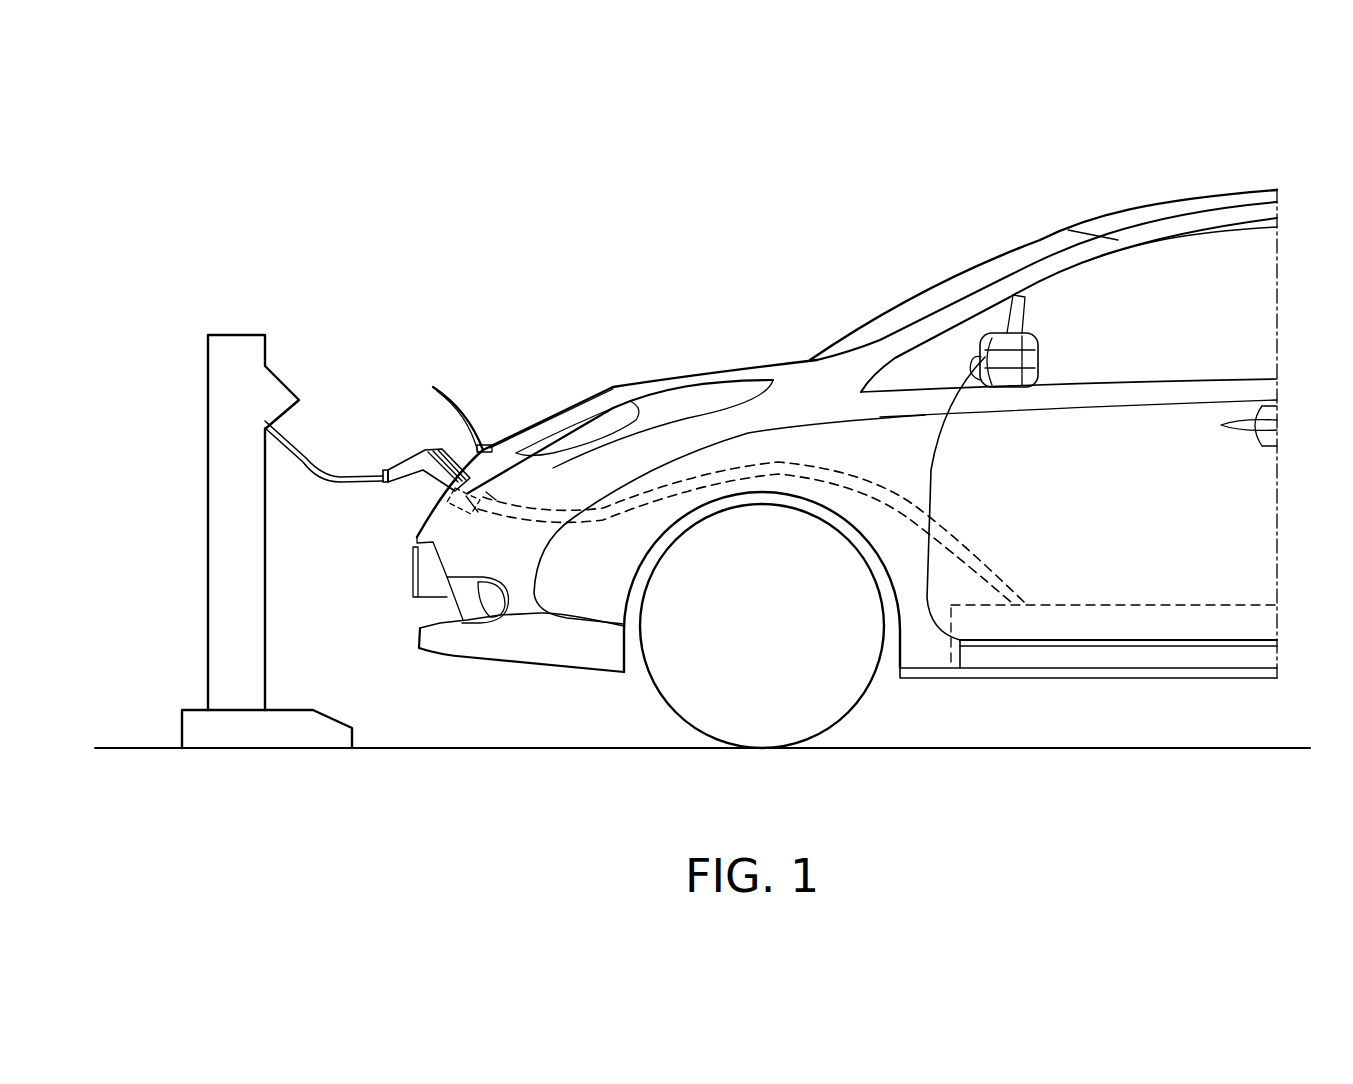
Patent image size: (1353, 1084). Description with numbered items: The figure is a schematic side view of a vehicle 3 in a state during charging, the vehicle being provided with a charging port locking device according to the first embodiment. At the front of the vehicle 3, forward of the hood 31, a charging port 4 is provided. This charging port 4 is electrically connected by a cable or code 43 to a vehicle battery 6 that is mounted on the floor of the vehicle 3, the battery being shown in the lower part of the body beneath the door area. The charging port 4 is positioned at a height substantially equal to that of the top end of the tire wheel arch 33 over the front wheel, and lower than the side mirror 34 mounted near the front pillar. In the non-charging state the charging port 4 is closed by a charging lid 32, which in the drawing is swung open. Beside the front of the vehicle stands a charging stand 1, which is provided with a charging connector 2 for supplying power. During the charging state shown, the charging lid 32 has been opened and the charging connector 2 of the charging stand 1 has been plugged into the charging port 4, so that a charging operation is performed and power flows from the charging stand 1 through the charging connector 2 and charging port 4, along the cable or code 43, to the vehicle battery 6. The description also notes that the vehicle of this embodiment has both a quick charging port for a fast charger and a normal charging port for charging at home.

The charging stand 1 is at (248, 320).
The charging connector 2 is at (407, 440).
The vehicle 3 is at (866, 457).
The charging port 4 is at (452, 518).
The vehicle battery 6 is at (1203, 605).
The hood 31 is at (552, 405).
The charging lid 32 is at (462, 407).
The tire wheel arch 33 is at (847, 507).
The side mirror 34 is at (1000, 355).
The cable or code 43 is at (808, 465).